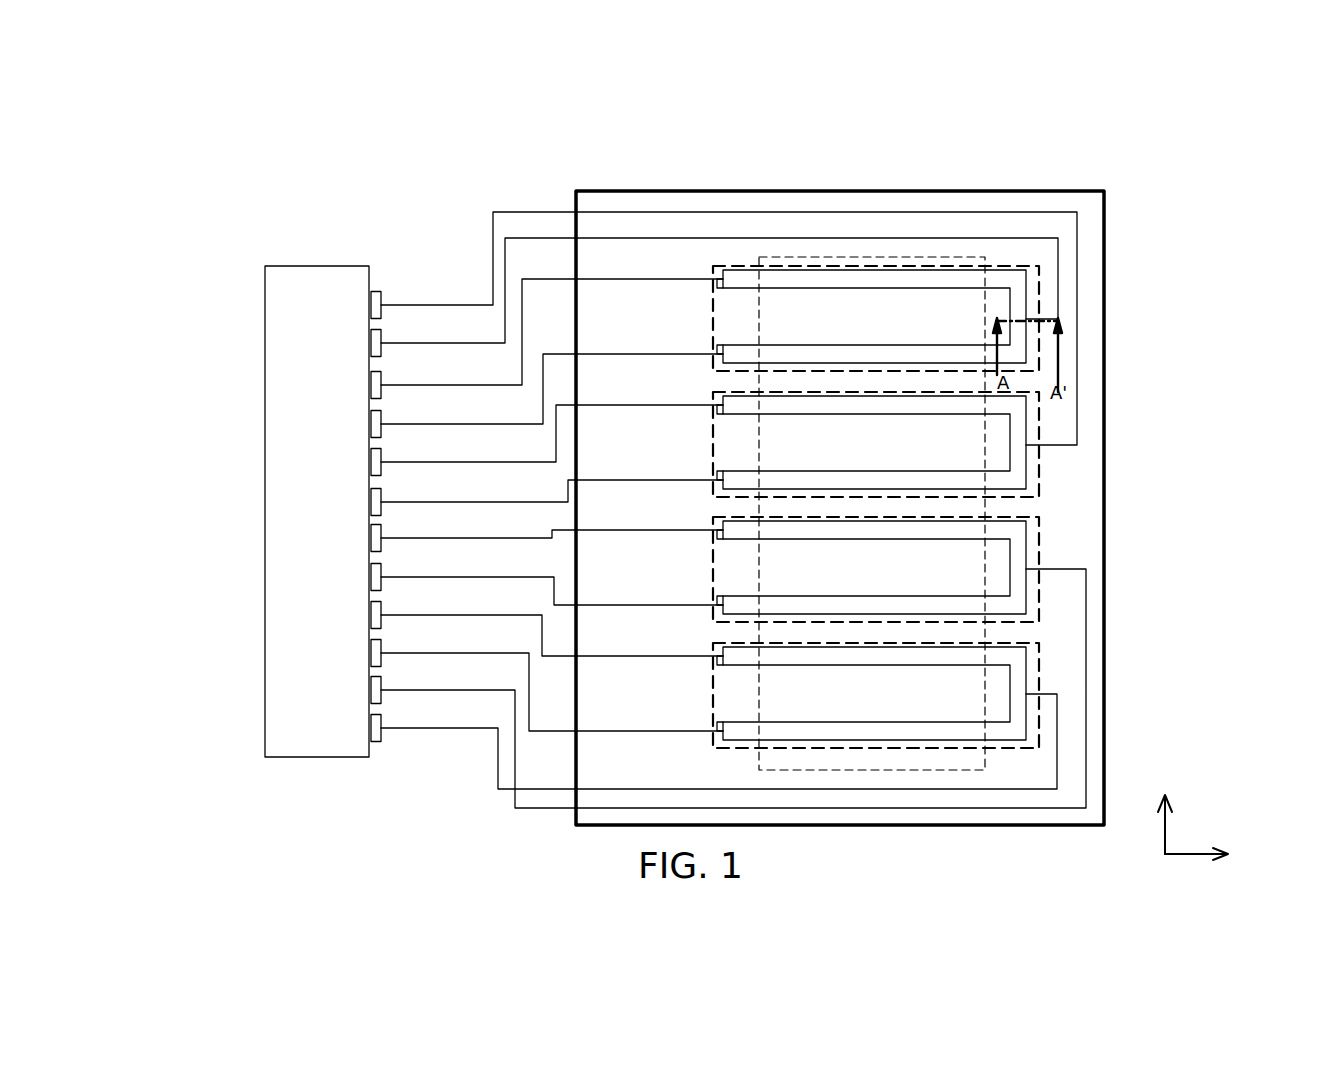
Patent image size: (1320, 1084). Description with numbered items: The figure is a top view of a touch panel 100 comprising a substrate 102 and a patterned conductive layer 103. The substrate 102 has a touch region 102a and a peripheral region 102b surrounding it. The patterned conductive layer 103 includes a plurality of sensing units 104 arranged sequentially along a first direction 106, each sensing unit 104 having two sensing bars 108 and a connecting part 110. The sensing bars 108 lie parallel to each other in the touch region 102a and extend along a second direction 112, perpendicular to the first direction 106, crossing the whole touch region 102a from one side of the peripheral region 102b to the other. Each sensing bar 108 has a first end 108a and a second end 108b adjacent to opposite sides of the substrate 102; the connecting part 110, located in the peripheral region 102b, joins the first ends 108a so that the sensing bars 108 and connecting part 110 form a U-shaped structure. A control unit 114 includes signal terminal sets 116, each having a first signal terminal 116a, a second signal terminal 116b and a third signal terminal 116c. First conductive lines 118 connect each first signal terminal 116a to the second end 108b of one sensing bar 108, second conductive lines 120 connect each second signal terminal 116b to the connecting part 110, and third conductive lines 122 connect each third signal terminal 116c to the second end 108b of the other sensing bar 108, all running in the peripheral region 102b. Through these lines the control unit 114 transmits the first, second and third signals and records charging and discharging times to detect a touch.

The touch panel 100 is at (1104, 172).
The substrate 102 is at (1108, 208).
The touch region 102a is at (878, 255).
The peripheral region 102b is at (818, 200).
The patterned conductive layer 103 is at (835, 740).
The sensing unit 104 is at (959, 507).
The first direction 106 is at (1167, 811).
The sensing bar 108 is at (874, 505).
The first end 108a is at (1091, 505).
The second end 108b is at (692, 528).
The connecting part 110 is at (977, 493).
The second direction 112 is at (1217, 854).
The control unit 114 is at (290, 265).
The signal terminal set 116 is at (317, 510).
The first signal terminal 116a is at (369, 461).
The second signal terminal 116b is at (369, 310).
The third signal terminal 116c is at (200, 695).
The first conductive line 118 is at (552, 452).
The second conductive line 120 is at (993, 237).
The third conductive line 122 is at (552, 516).